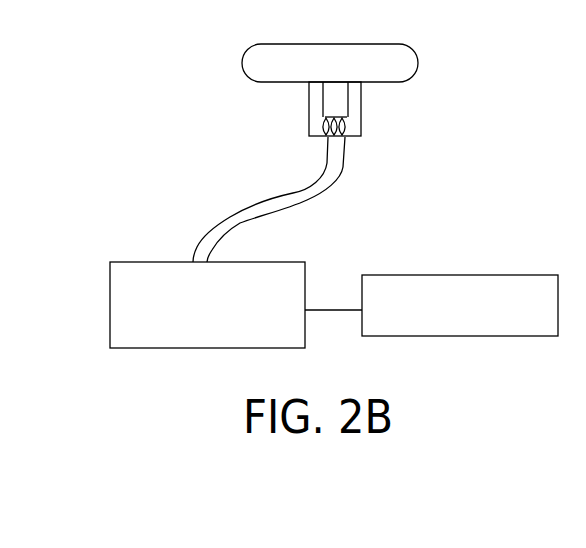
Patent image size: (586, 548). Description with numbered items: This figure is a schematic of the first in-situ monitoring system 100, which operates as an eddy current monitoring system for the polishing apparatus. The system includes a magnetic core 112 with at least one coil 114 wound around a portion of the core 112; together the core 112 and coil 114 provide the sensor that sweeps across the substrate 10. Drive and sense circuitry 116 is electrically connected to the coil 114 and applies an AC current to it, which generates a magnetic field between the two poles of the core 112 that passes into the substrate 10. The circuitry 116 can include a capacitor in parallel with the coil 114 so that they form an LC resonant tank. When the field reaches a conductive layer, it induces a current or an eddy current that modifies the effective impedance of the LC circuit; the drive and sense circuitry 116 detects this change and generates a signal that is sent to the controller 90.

The first in-situ monitoring system 100 is at (460, 145).
The substrate 10 is at (330, 63).
The magnetic core 112 is at (361, 105).
The coil 114 is at (323, 130).
The drive and sense circuitry 116 is at (110, 282).
The controller 90 is at (463, 336).